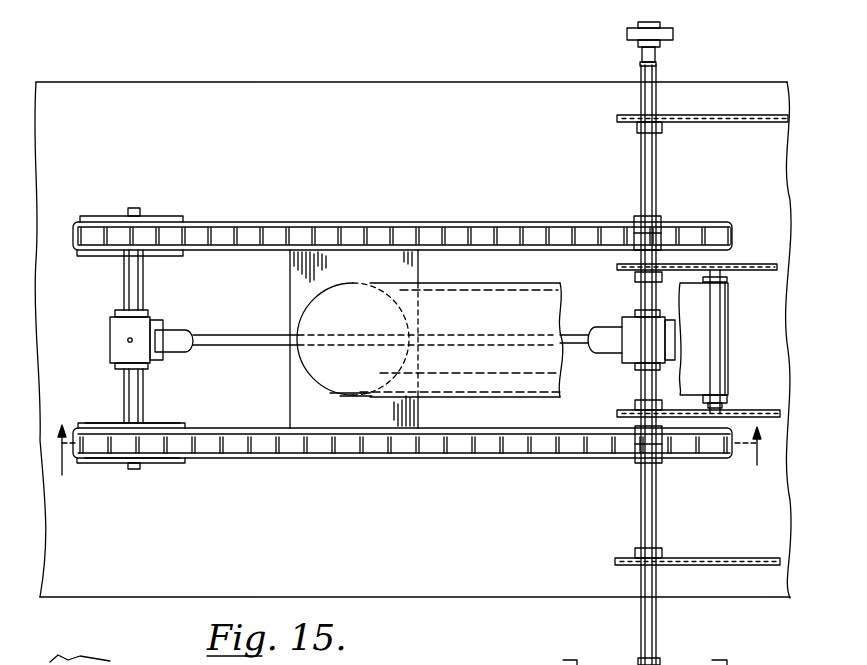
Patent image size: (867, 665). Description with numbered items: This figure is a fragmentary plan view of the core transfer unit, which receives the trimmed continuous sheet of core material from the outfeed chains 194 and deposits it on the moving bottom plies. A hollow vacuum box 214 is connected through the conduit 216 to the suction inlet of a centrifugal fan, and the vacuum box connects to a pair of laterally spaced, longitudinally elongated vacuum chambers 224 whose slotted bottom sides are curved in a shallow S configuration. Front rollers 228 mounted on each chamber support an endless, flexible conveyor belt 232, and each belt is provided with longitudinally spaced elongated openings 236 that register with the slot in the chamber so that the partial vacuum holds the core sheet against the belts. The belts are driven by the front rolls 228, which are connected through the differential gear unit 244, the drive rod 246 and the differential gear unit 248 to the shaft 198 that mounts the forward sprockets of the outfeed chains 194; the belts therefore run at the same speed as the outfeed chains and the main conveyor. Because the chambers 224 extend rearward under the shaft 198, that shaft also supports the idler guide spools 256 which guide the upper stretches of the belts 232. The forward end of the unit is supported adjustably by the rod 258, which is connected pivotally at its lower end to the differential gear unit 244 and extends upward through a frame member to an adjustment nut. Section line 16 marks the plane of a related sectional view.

The section line 16- 16 is at (405, 462).
The outfeed chains 194 is at (733, 123).
The shaft 198 is at (656, 514).
The vacuum box 214 is at (291, 301).
The conduit 216 is at (472, 284).
The vacuum chambers 224 is at (346, 253).
The front rollers 228 is at (167, 463).
The conveyor belt 232 is at (255, 222).
The elongated openings 236 is at (505, 447).
The differential gear unit 244 is at (110, 326).
The drive rod 246 is at (252, 347).
The differential gear unit 248 is at (632, 352).
The idler guide spools 256 is at (640, 218).
The rod 258 is at (127, 340).